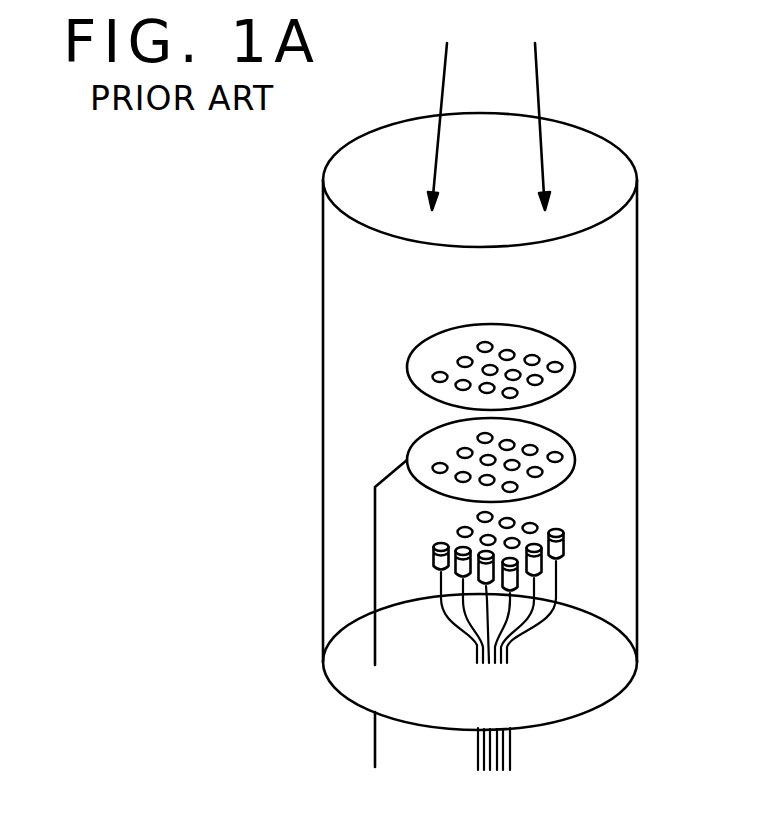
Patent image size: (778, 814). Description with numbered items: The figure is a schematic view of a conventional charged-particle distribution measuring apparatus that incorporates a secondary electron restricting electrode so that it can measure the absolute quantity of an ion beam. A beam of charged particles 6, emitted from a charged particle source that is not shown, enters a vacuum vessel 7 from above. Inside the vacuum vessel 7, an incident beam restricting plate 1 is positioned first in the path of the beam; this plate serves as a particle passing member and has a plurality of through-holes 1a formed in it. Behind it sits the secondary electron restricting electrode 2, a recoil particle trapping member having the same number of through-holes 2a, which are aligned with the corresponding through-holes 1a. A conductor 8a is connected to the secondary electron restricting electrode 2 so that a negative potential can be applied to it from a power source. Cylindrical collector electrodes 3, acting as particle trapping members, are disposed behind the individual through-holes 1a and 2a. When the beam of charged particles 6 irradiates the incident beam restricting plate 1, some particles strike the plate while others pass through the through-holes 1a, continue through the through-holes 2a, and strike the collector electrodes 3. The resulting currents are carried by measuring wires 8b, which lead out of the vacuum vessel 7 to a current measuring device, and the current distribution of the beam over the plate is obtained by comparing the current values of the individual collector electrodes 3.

The beam of charged particles 6 is at (578, 145).
The vacuum vessel 7 is at (615, 307).
The incident beam restricting plate 1 is at (567, 358).
The through-holes 1a is at (559, 372).
The secondary electron restricting electrode 2 is at (563, 437).
The through-holes 2a is at (559, 462).
The cylindrical collector electrodes 3 is at (563, 547).
The conductor 8a is at (375, 587).
The measuring wires 8b is at (510, 748).